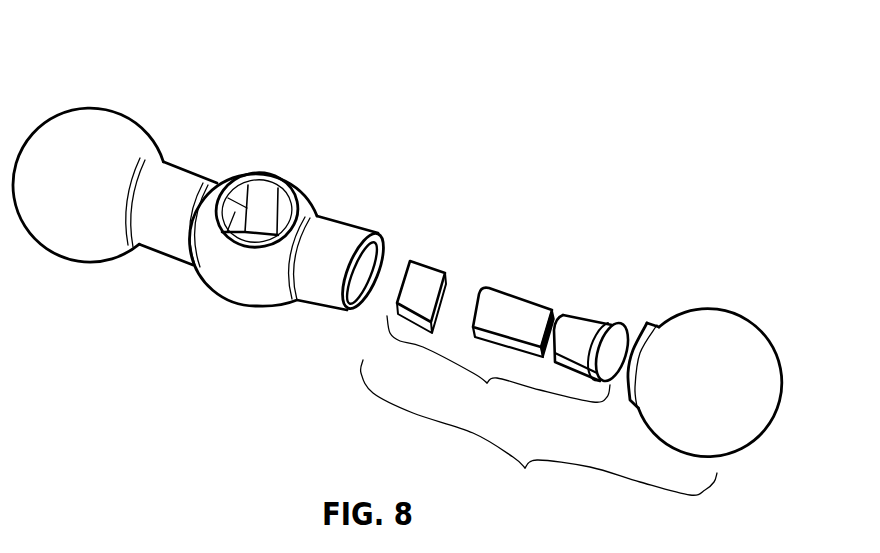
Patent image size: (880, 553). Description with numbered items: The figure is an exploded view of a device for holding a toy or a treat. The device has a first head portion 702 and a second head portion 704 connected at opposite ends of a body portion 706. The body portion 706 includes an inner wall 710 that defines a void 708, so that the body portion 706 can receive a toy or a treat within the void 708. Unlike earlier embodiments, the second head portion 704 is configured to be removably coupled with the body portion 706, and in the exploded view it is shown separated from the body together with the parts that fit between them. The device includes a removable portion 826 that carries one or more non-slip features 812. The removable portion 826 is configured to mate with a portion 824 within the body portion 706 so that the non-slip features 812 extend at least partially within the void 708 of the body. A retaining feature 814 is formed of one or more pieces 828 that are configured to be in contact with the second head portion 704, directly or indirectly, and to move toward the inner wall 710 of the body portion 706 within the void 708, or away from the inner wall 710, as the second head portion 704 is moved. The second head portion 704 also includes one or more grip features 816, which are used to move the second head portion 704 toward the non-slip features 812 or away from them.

The first head portion 702 is at (120, 109).
The second head portion 704 is at (748, 308).
The body portion 706 is at (262, 152).
The void 708 is at (286, 186).
The inner wall 710 is at (250, 222).
The non-slip features 812 is at (433, 265).
The retaining feature 814 is at (582, 310).
The grip features 816 is at (625, 300).
The portion within the body portion 824 is at (358, 298).
The removable portion 826 is at (539, 430).
The pieces 828 is at (498, 369).